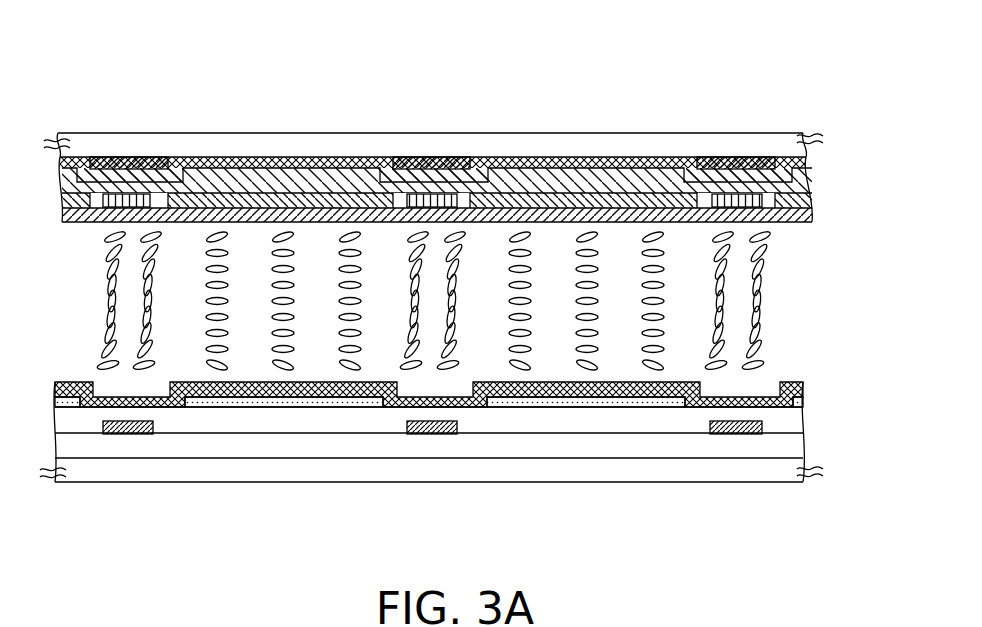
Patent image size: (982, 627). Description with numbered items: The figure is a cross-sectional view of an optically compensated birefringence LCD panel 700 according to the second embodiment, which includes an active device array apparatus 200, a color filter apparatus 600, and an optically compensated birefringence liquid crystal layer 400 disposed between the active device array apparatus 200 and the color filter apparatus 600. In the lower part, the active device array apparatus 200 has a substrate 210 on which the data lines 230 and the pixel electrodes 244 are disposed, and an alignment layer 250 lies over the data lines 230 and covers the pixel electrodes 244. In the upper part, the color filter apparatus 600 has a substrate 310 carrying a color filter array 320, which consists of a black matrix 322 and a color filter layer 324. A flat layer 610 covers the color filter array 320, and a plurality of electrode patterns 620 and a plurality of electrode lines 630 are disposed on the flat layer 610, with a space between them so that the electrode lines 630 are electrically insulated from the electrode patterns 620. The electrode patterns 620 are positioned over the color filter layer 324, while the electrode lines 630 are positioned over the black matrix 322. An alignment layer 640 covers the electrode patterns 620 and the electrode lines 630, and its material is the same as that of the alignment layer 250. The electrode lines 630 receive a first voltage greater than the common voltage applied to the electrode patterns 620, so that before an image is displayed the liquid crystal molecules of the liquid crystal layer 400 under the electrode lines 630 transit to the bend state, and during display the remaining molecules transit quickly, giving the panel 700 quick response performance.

The optically compensated birefringence LCD panel 700 is at (463, 287).
The color filter apparatus 600 is at (465, 119).
The substrate 310 is at (125, 140).
The color filter array 320 is at (434, 99).
The black matrix 322 is at (430, 166).
The color filter layer 324 is at (400, 59).
The flat layer 610 is at (592, 180).
The electrode patterns 620 is at (212, 201).
The electrode lines 630 is at (415, 196).
The alignment layer 640 is at (275, 212).
The optically compensated birefringence liquid crystal layer 400 is at (748, 277).
The active device array apparatus 200 is at (461, 469).
The substrate 210 is at (137, 473).
The data lines 230 is at (153, 426).
The pixel electrode 244 is at (290, 401).
The alignment layer 250 is at (348, 396).